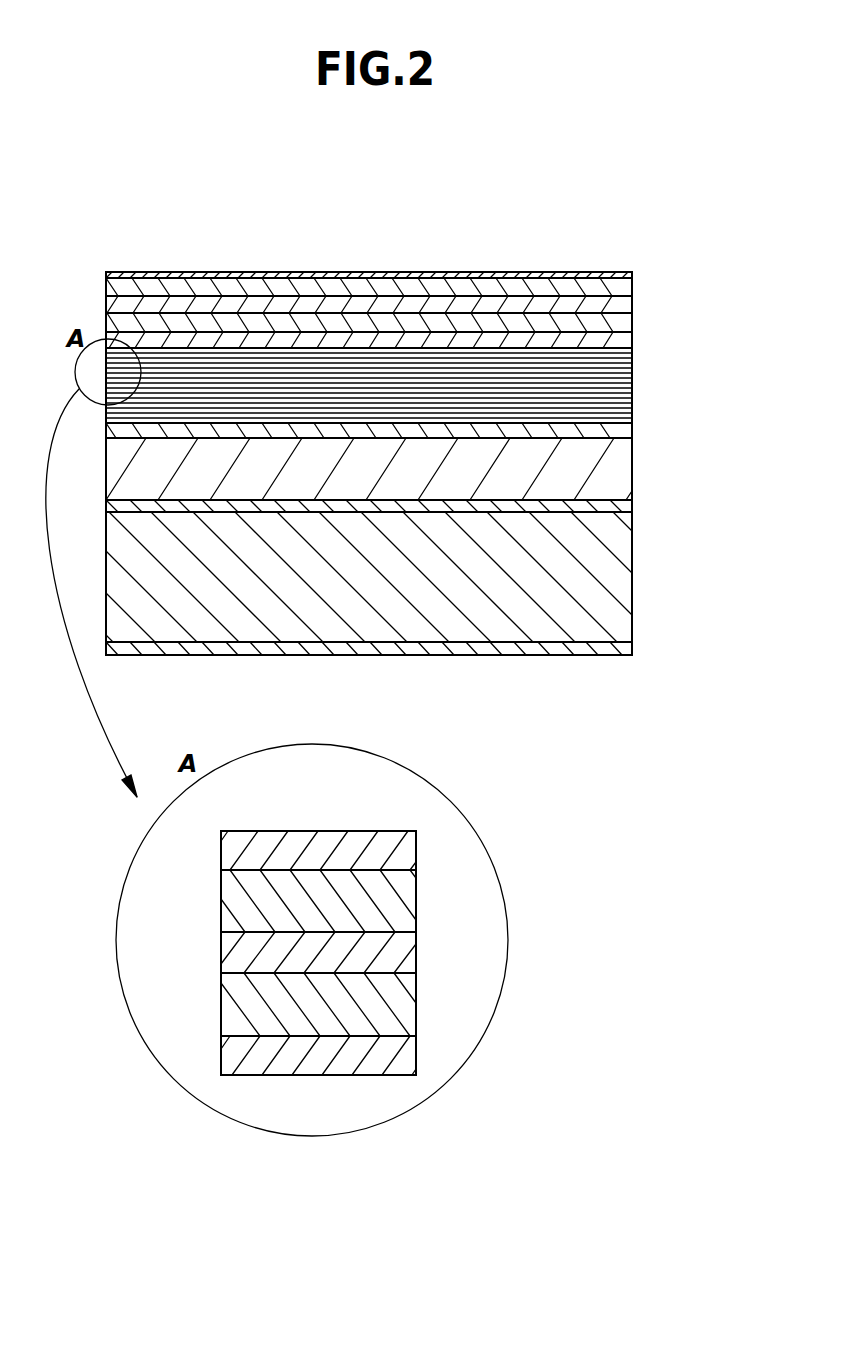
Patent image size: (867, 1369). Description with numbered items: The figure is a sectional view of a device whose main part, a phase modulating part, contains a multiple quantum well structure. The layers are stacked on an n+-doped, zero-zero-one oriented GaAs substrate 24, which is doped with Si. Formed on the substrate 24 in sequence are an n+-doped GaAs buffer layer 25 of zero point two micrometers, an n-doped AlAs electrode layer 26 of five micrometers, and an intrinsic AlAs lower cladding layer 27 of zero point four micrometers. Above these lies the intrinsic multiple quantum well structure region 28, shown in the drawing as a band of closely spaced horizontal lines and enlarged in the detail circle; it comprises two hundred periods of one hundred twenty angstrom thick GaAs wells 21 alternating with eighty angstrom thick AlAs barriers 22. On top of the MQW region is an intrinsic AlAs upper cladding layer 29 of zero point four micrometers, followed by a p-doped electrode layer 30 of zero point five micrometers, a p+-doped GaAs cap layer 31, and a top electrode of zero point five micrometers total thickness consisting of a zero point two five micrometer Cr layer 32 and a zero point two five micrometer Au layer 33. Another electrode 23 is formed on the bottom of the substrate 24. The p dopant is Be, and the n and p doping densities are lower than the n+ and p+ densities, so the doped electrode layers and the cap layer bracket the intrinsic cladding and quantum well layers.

The GaAs well 21 is at (416, 901).
The AlAs barrier 22 is at (416, 846).
The electrode 23 is at (633, 650).
The GaAs substrate 24 is at (633, 578).
The GaAs buffer layer 25 is at (633, 507).
The AlAs electrode layer 26 is at (633, 470).
The AlAs lower cladding layer 27 is at (632, 430).
The multiple quantum well structure region 28 is at (632, 378).
The AlAs upper cladding layer 29 is at (632, 340).
The p-doped electrode layer 30 is at (632, 318).
The GaAs cap layer 31 is at (632, 301).
The Cr layer 32 is at (106, 288).
The Au layer 33 is at (369, 272).